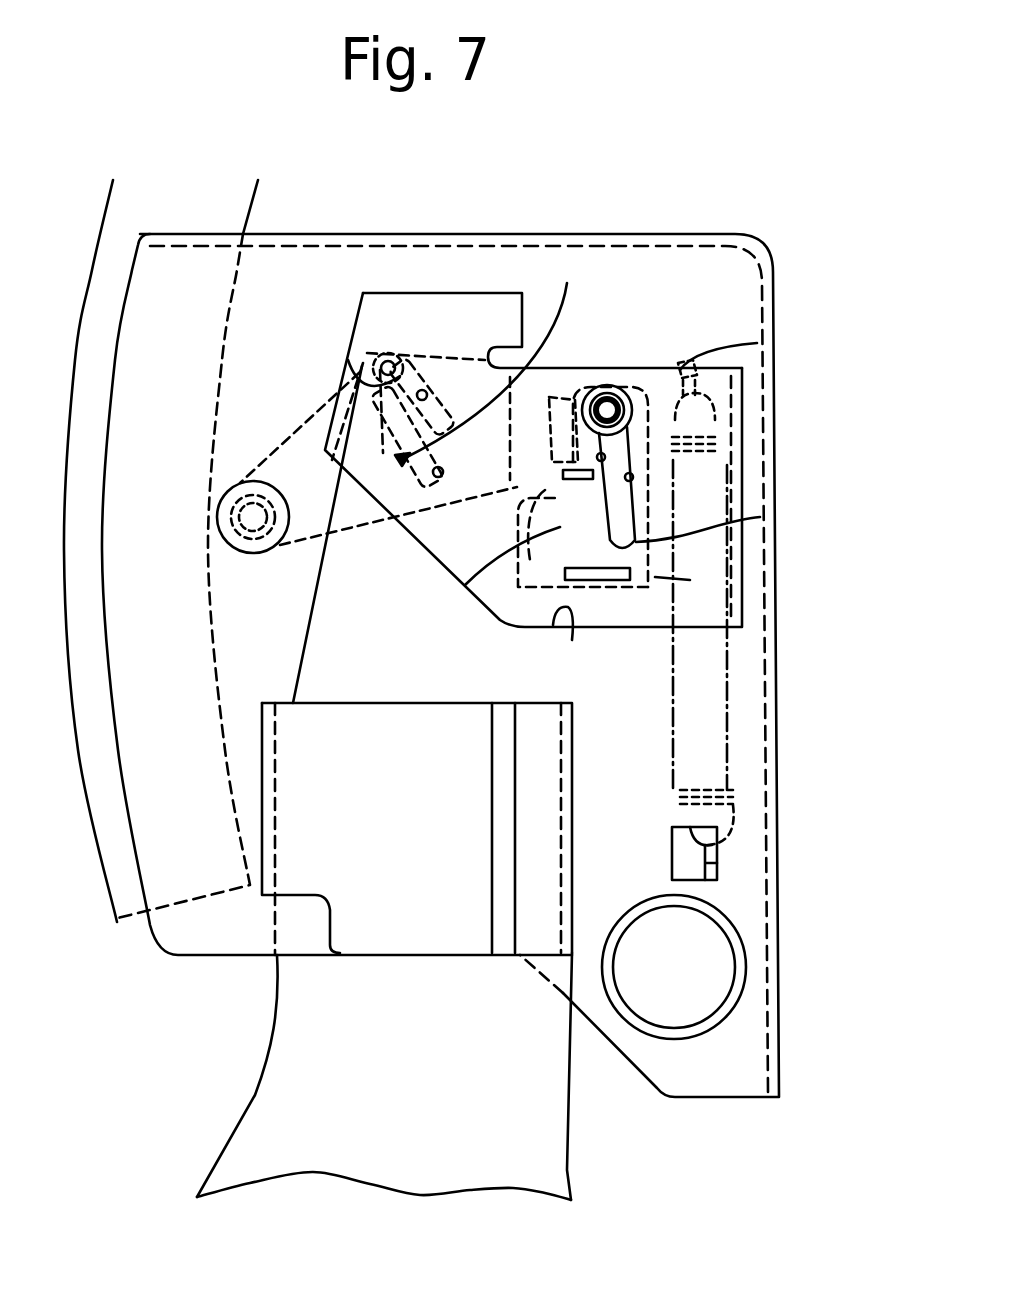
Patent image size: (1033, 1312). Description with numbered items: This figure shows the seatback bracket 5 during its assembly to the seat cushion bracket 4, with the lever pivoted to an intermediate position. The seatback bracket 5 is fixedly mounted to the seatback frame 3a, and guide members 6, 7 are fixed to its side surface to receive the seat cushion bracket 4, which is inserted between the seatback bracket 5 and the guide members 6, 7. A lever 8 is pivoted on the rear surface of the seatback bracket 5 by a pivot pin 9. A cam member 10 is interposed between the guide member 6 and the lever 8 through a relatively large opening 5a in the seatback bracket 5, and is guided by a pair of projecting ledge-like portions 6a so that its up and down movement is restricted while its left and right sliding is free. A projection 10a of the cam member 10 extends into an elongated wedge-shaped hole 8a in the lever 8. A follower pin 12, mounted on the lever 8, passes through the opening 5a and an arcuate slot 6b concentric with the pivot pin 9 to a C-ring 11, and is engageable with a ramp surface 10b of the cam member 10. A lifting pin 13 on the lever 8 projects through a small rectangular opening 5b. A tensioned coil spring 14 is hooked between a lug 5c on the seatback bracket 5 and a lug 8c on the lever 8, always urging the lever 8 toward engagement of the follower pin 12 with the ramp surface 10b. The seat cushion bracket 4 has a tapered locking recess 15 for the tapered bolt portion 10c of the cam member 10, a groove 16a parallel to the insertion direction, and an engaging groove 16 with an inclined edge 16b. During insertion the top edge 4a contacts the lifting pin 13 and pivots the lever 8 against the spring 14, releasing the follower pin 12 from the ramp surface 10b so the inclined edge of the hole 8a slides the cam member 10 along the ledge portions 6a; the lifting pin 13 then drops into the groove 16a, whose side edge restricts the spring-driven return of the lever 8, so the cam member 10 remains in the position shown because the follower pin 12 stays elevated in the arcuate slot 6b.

The seatback frame 3a is at (83, 750).
The seat cushion bracket 4 is at (265, 1068).
The top edge 4a is at (423, 355).
The seatback bracket 5 is at (775, 265).
The opening 5a is at (636, 378).
The opening 5b is at (423, 395).
The lug 5c is at (718, 873).
The guide member 6 is at (498, 285).
The projecting ledge-like portions 6a is at (632, 576).
The elongated arcuate slot 6b is at (636, 477).
The guide member 7 is at (376, 960).
The lever 8 is at (422, 508).
The elongated wedge-shaped hole 8a is at (672, 463).
The lug 8c is at (757, 343).
The pivot pin 9 is at (256, 481).
The cam member 10 is at (570, 550).
The projection 10a is at (612, 598).
The ramp surface 10b is at (760, 517).
The tapered bolt portion 10c is at (567, 503).
The C-ring 11 is at (622, 375).
The follower pin 12 is at (598, 385).
The lifting pin 13 is at (380, 352).
The tensioned coil spring 14 is at (720, 697).
The tapered locking recess 15 is at (573, 625).
The engaging groove 16 is at (398, 465).
The groove 16a is at (362, 367).
The inclined edge 16b is at (500, 400).